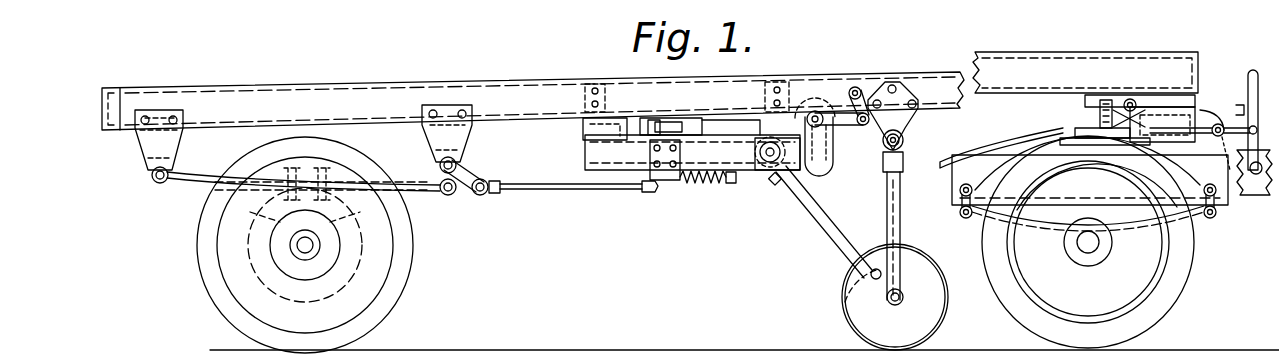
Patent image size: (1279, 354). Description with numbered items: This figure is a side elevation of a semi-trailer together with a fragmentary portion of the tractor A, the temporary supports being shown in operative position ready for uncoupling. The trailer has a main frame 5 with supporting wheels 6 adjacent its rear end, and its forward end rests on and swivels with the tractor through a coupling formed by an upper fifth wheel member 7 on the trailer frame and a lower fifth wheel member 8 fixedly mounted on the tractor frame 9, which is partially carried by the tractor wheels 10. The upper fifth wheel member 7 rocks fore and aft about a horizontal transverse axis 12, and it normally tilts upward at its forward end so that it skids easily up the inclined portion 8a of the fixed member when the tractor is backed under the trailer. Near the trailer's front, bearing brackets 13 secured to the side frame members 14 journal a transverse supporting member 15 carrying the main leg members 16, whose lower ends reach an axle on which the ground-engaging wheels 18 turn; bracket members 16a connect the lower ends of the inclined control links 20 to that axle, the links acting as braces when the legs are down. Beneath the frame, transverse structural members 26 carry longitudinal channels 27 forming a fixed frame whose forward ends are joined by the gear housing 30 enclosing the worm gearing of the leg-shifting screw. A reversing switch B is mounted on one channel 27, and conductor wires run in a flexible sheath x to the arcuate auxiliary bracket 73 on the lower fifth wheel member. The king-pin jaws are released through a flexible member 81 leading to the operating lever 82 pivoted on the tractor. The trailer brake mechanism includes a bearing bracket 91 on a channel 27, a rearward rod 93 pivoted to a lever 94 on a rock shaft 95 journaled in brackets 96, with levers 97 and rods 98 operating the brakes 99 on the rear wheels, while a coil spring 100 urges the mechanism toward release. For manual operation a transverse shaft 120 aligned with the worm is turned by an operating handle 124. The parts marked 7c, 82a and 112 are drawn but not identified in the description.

The main frame 5 is at (524, 86).
The supporting wheels 6 is at (395, 292).
The upper fifth wheel member 7 is at (1092, 125).
The spring pin 7c is at (1122, 105).
The lower fifth wheel member 8 is at (1065, 135).
The inclined portion 8a is at (990, 146).
The tractor frame 9 is at (1215, 172).
The wheels 10 is at (1175, 285).
The horizontal transverse axis 12 is at (1130, 110).
The bearing brackets 13 is at (905, 114).
The side frame members 14 is at (950, 100).
The transversely disposed supporting member 15 is at (900, 148).
The main struts or leg members 16 is at (886, 220).
The bracket members 16a is at (846, 300).
The ground-engaging wheels 18 is at (947, 284).
The control links 20 is at (826, 220).
The transversely extending structural members 26 is at (585, 133).
The longitudinally extending channels 27 is at (742, 160).
The gear housing 30 is at (820, 165).
The auxiliary bracket 73 is at (1198, 118).
The flexible member 81 is at (1251, 133).
The operating lever 82 is at (1252, 75).
The lever hook 82a is at (1240, 105).
The bearing bracket 91 is at (672, 185).
The rearwardly extending rod 93 is at (582, 190).
The lever 94 is at (466, 179).
The rock shaft 95 is at (458, 160).
The brackets 96 is at (425, 135).
The levers 97 is at (455, 196).
The rods 98 is at (422, 194).
The brakes 99 is at (395, 252).
The coil spring 100 is at (700, 183).
The bracket 112 is at (668, 120).
The transversely extending shaft 120 is at (820, 111).
The operating handle 124 is at (843, 126).
The reversing switch B is at (698, 128).
The flexible sheath x is at (720, 125).
The tractor A is at (1200, 205).